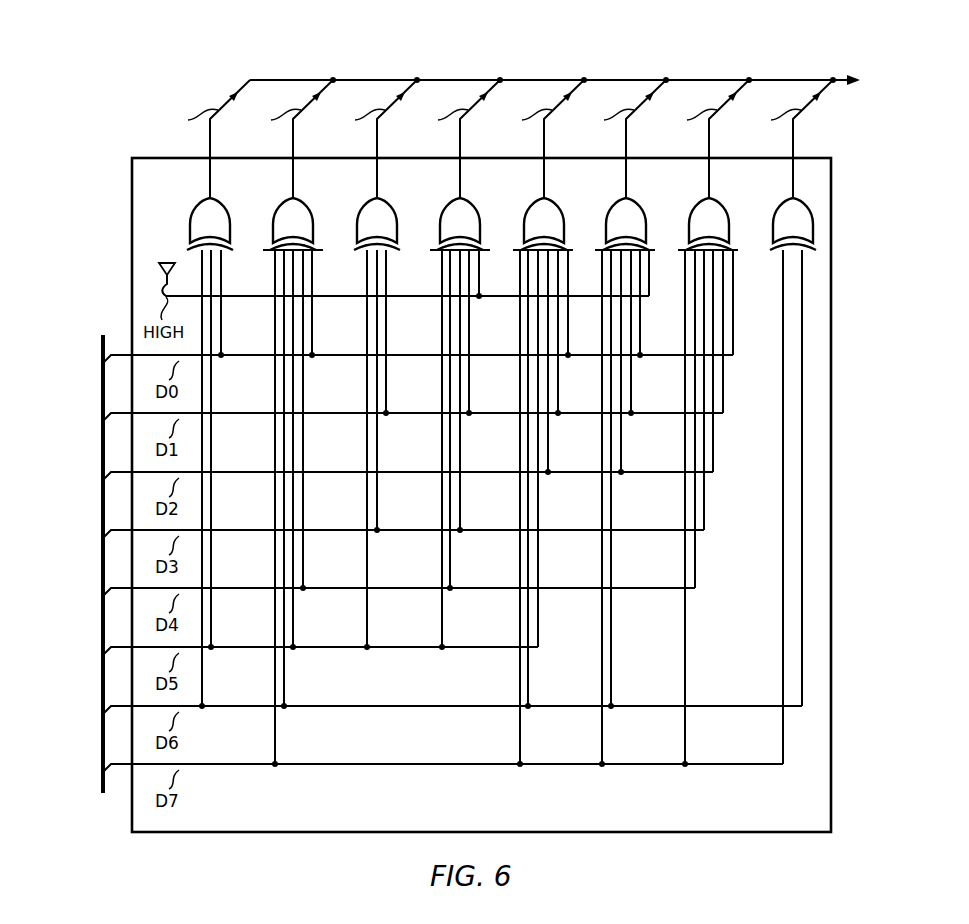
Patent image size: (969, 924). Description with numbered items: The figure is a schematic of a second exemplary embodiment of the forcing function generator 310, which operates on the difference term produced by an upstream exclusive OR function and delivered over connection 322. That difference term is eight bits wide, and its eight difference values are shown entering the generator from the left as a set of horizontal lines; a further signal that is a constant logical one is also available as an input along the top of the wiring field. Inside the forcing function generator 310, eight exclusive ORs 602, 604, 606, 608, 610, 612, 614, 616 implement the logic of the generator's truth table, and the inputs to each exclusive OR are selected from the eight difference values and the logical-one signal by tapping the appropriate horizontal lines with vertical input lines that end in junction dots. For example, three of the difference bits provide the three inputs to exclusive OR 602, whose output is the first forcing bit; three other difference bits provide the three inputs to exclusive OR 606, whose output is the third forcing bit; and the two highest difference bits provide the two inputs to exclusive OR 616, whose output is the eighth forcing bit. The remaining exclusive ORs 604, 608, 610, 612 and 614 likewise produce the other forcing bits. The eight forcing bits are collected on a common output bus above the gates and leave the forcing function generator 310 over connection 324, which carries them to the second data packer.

The forcing function generator 310 is at (327, 836).
The connection 322 is at (95, 558).
The connection 324 is at (779, 79).
The exclusive OR 602 is at (197, 211).
The exclusive OR 604 is at (280, 211).
The exclusive OR 606 is at (364, 211).
The exclusive OR 608 is at (447, 211).
The exclusive OR 610 is at (531, 211).
The exclusive OR 612 is at (613, 211).
The exclusive OR 614 is at (696, 211).
The exclusive OR 616 is at (780, 211).